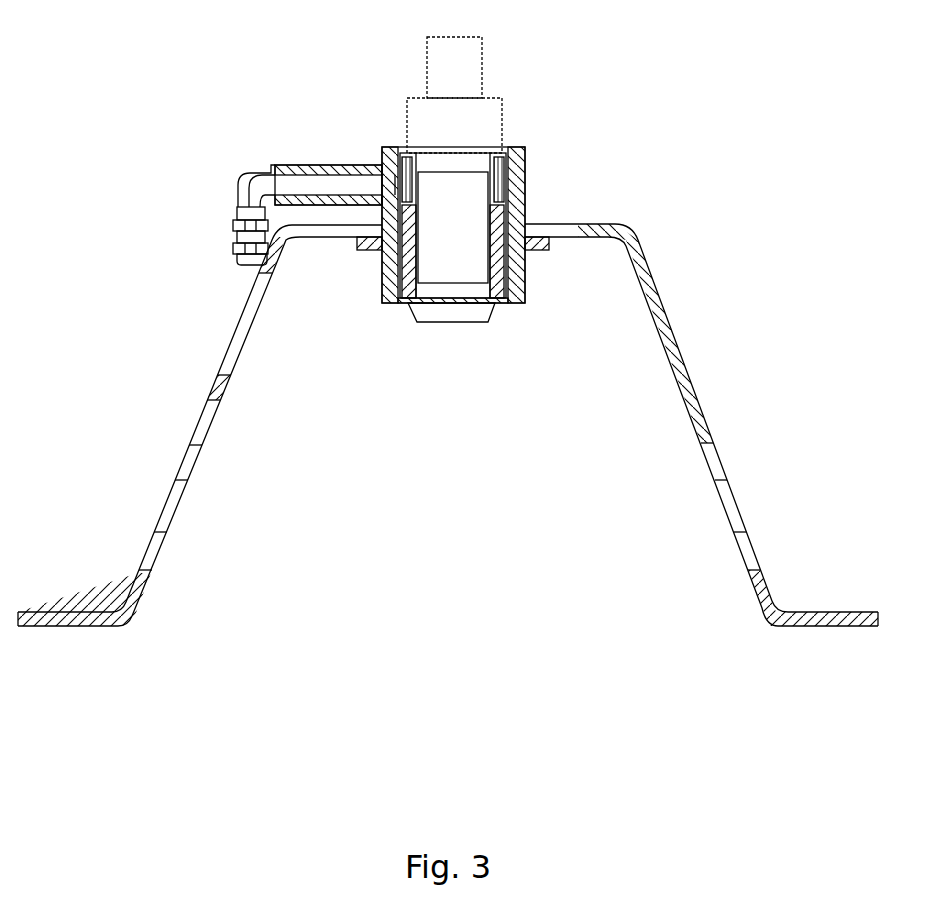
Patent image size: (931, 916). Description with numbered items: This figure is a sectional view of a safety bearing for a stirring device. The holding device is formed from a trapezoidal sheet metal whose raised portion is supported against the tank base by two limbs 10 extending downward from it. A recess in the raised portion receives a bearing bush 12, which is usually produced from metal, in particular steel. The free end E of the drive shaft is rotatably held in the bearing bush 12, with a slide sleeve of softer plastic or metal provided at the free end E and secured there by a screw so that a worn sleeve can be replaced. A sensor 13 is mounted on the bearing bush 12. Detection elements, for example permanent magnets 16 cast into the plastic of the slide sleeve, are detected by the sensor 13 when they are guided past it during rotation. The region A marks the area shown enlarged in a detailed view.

The limbs 10 is at (212, 399).
The bearing bush 12 is at (513, 292).
The sensor 13 is at (324, 165).
The permanent magnets 16 is at (506, 198).
The free end of the drive shaft E is at (465, 55).
The region A is at (541, 160).